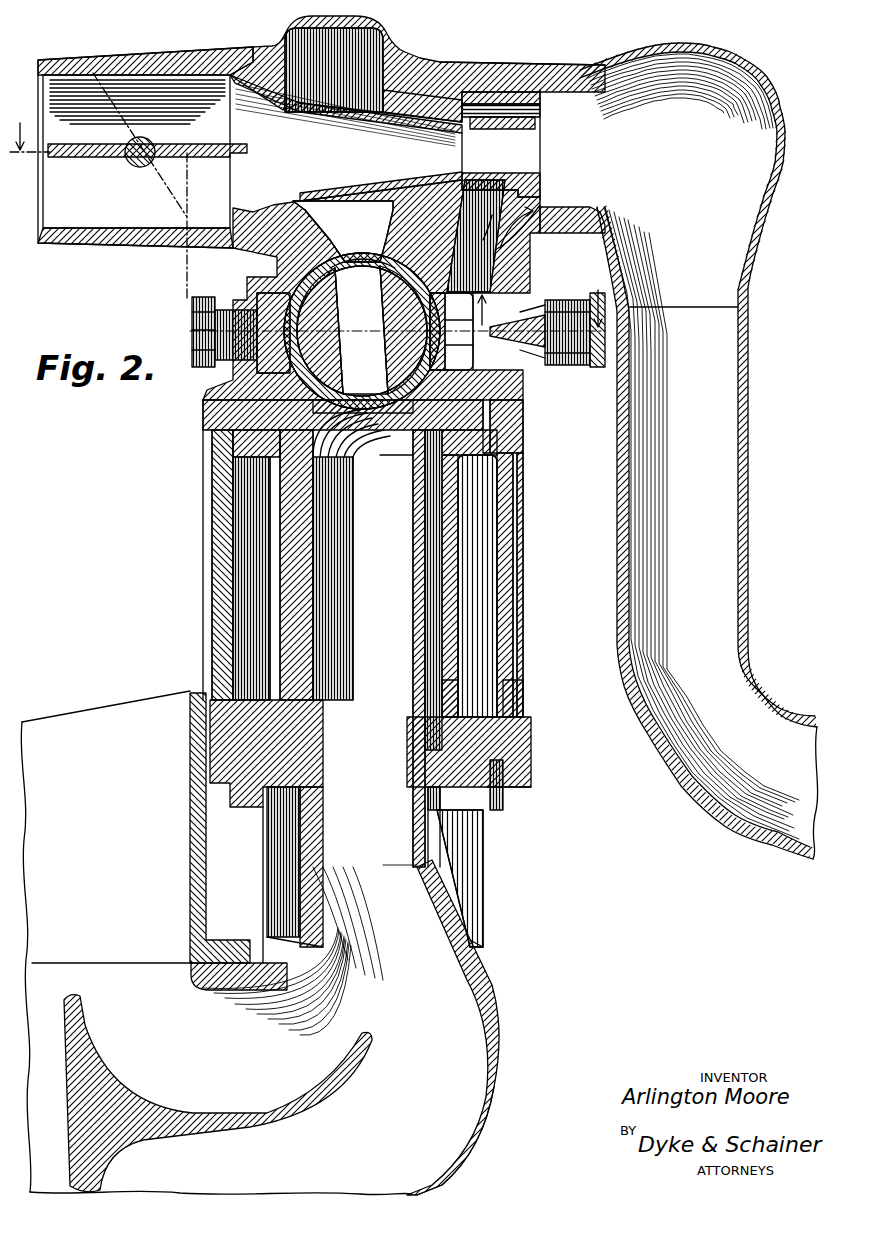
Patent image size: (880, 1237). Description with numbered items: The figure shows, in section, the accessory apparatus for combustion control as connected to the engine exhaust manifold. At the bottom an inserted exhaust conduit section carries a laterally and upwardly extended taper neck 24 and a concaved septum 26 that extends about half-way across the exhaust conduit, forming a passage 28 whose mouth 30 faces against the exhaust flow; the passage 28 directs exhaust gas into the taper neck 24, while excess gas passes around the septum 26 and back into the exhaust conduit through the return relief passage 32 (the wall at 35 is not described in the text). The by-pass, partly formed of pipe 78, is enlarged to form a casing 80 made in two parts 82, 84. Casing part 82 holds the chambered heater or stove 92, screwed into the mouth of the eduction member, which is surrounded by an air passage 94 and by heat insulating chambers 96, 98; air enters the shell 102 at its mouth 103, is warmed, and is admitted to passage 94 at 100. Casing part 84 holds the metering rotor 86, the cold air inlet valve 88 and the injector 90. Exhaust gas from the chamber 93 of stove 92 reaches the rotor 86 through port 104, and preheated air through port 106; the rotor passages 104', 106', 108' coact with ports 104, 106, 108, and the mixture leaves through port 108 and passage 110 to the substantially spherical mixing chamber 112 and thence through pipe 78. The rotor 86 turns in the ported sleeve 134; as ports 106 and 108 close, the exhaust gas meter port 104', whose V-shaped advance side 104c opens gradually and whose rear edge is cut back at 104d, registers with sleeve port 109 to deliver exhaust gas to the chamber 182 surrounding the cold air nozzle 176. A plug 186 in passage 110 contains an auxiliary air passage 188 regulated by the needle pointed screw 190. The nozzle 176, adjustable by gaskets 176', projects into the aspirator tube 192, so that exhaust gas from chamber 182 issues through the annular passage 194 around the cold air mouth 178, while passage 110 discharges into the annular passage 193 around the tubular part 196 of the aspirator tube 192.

The taper neck 24 is at (483, 971).
The concaved septum 26 is at (213, 1114).
The passage 28 is at (221, 1061).
The mouth 30 is at (163, 972).
The return relief passage 32 is at (445, 1099).
The housing side wall 35 is at (38, 957).
The pipe 78 is at (767, 709).
The casing 80 is at (532, 769).
The casing part 82 is at (220, 773).
The casing part 84 is at (212, 403).
The metering rotor 86 is at (437, 320).
The cold air inlet valve 88 is at (100, 153).
The injector 90 is at (448, 76).
The chambered heater 92 is at (421, 641).
The chamber 93 is at (363, 555).
The air passage 94 is at (433, 528).
The heat insulating chamber 96 is at (481, 544).
The heat insulating chamber 98 is at (516, 624).
The air admission point 100 is at (449, 784).
The shell 102 is at (484, 878).
The mouth 103 is at (480, 953).
The port 104 is at (397, 349).
The exhaust gas meter port 104' is at (335, 241).
The V-shaped advance side 104c is at (385, 404).
The cut-back rear edge 104d is at (332, 382).
The port 106 is at (242, 333).
The rotor passage 106' is at (363, 307).
The port 108 is at (453, 331).
The rotor passage 108' is at (370, 368).
The sleeve port 109 is at (341, 264).
The passage 110 is at (539, 208).
The mixing chamber 112 is at (724, 90).
The ported sleeve 134 is at (383, 241).
The cold air aspirating nozzle 176 is at (422, 81).
The gaskets 176' is at (417, 69).
The cold air passage 178 is at (459, 142).
The exhaust gas chamber 182 is at (364, 54).
The plug 186 is at (541, 368).
The passage 188 is at (546, 283).
The needle pointed screw 190 is at (567, 368).
The aspirating tube 192 is at (462, 106).
The annular passage 193 is at (534, 183).
The annular passage 194 is at (468, 176).
The tubular part 196 is at (508, 117).